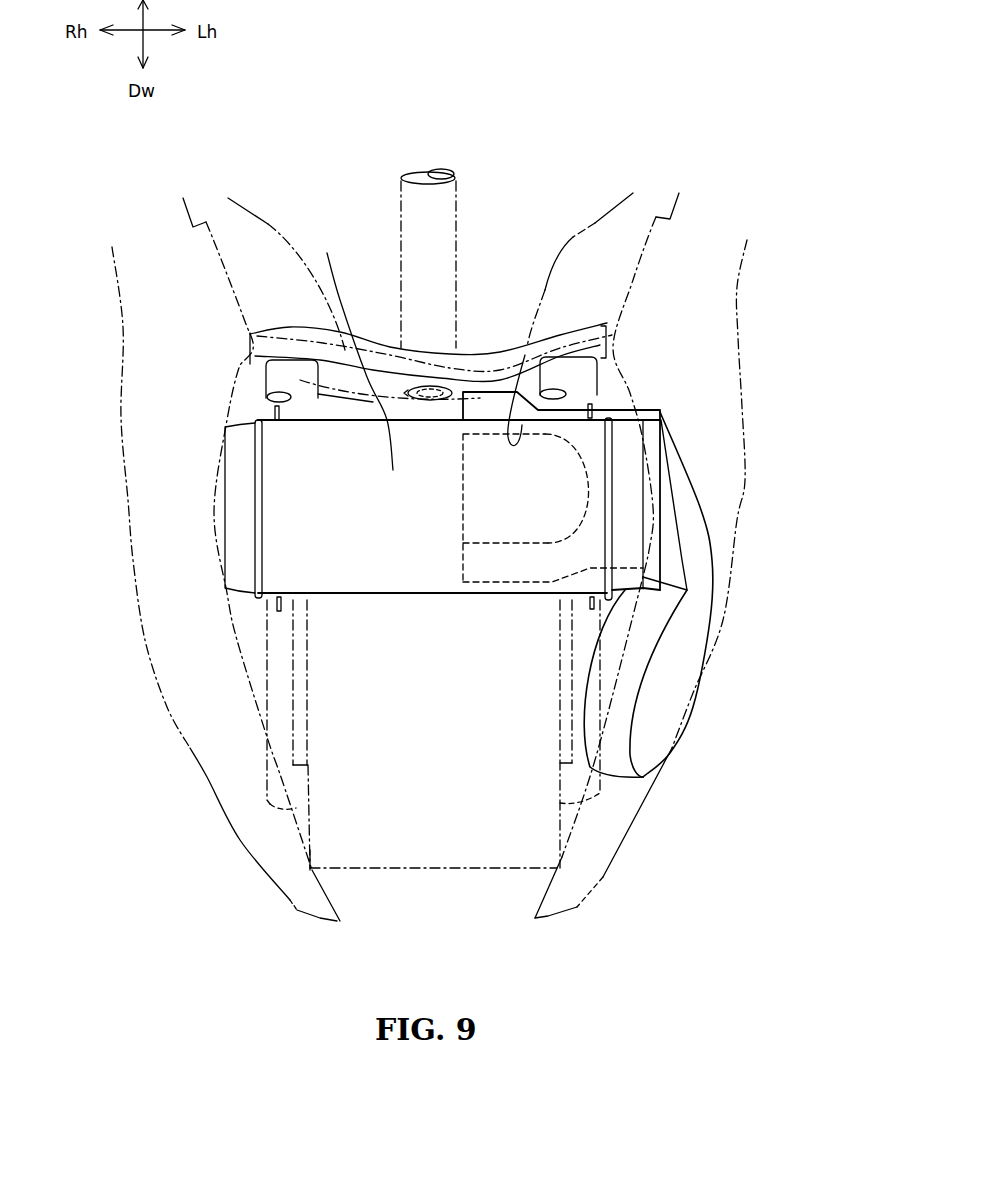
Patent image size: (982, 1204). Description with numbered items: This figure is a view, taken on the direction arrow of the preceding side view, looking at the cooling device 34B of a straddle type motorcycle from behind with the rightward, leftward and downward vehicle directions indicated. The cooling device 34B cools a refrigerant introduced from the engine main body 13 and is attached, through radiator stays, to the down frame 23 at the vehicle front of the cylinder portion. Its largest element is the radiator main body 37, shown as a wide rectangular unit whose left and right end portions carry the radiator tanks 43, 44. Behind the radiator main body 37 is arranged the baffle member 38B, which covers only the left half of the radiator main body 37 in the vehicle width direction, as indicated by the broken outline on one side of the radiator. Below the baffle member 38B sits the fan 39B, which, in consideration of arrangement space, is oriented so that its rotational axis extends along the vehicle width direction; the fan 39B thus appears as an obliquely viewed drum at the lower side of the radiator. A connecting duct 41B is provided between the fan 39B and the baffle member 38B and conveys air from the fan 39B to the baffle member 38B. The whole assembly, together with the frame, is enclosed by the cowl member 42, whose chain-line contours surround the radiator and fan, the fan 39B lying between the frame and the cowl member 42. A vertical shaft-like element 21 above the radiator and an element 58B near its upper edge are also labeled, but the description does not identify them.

The engine main body 13 is at (413, 868).
The steering shaft 21 is at (400, 242).
The down frame 23 is at (267, 780).
The cooling device 34B is at (498, 362).
The radiator main body 37 is at (354, 347).
The baffle member 38B is at (483, 407).
The fan 39B is at (670, 708).
The connecting duct 41B is at (697, 507).
The cowl member 42 is at (647, 810).
The radiator tank 43 is at (623, 453).
The radiator tank 44 is at (240, 458).
The boss 58B is at (527, 347).